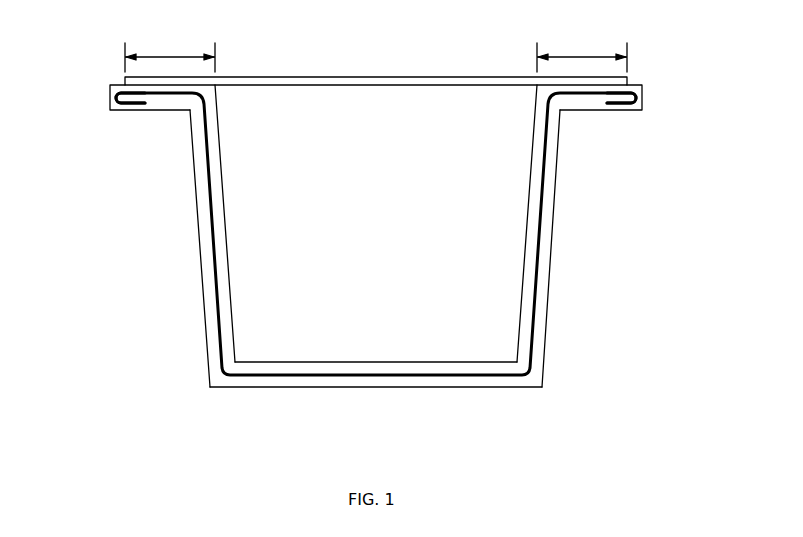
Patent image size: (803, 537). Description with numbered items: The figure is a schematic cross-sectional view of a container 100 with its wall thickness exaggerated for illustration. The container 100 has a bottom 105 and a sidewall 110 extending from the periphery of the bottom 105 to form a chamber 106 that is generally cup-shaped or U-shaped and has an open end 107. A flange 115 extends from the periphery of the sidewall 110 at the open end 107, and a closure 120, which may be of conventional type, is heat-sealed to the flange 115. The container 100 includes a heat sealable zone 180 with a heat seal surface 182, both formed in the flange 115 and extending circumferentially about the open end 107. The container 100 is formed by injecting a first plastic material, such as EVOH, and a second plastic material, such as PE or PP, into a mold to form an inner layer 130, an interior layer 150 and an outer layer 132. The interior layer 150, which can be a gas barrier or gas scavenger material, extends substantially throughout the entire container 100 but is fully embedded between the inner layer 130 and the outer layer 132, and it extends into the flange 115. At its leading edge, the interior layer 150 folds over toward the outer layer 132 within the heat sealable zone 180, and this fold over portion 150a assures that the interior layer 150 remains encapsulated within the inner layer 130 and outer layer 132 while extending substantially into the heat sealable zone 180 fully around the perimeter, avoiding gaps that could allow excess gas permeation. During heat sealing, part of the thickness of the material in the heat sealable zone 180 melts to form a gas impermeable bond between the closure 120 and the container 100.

The container 100 is at (343, 258).
The bottom 105 is at (483, 388).
The chamber 106 is at (390, 278).
The open end 107 is at (385, 90).
The sidewall 110 is at (205, 252).
The flange 115 is at (110, 105).
The closure 120 is at (403, 77).
The inner layer 130 is at (530, 253).
The outer layer 132 is at (545, 285).
The interior layer 150 is at (208, 202).
The fold over portion 150a is at (130, 104).
The heat sealable zone 180 is at (168, 56).
The heat seal surface 182 is at (204, 92).